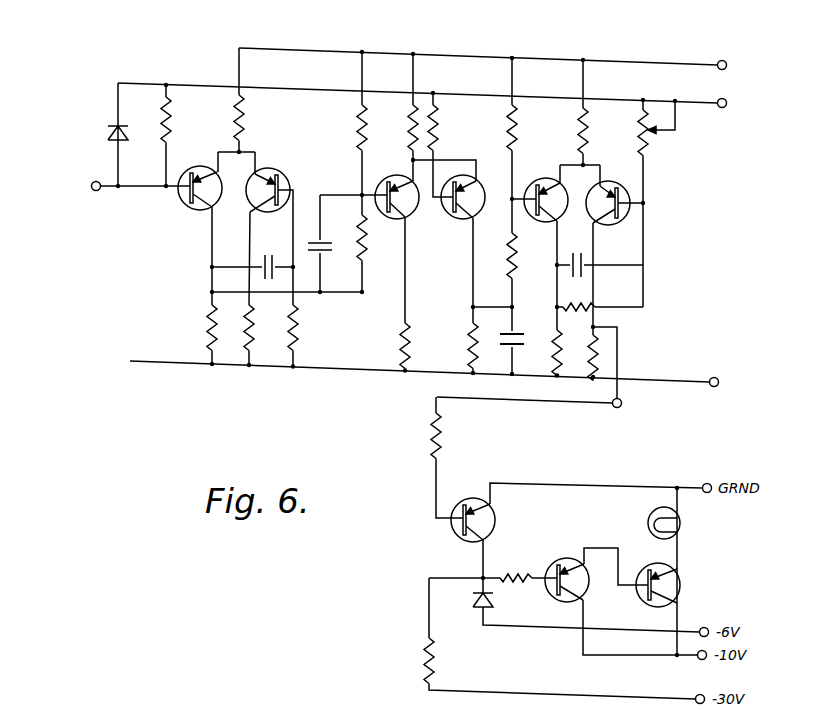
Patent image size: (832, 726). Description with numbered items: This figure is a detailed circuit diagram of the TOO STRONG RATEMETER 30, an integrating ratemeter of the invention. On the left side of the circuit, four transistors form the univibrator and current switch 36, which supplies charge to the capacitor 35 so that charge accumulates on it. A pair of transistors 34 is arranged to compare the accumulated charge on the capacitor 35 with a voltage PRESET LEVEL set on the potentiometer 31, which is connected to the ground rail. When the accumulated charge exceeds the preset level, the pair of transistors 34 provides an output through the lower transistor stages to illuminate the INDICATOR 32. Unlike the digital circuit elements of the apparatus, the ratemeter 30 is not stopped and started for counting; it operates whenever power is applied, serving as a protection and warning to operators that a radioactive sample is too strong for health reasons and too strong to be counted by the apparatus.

The too strong ratemeter 30 is at (404, 210).
The potentiometer 31 is at (653, 138).
The indicator 32 is at (719, 523).
The pair of transistors 34 is at (553, 177).
The capacitor 35 is at (513, 332).
The four transistor univibrator and current switch 36 is at (199, 166).